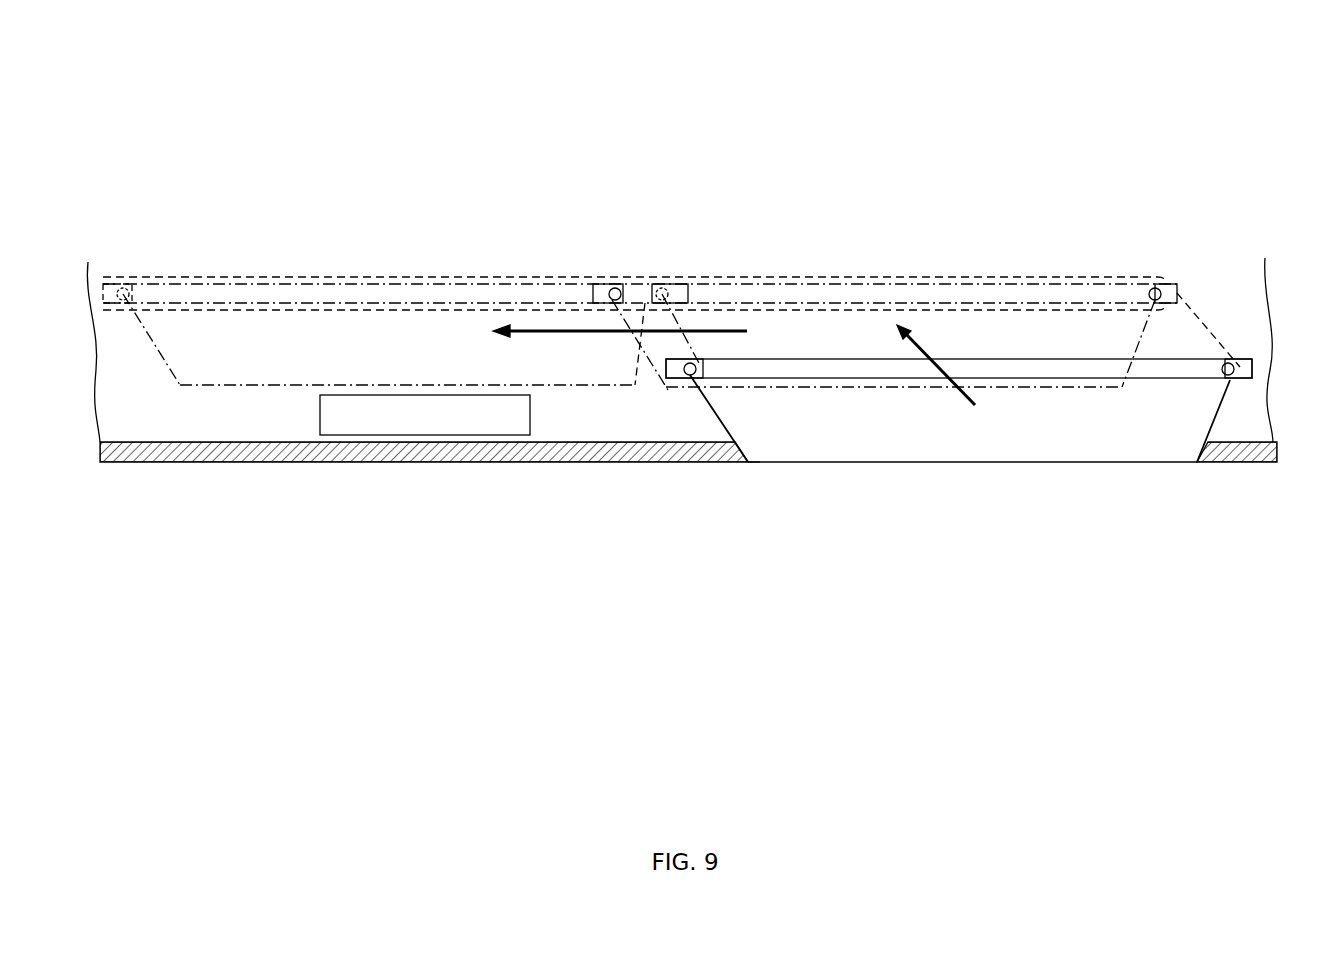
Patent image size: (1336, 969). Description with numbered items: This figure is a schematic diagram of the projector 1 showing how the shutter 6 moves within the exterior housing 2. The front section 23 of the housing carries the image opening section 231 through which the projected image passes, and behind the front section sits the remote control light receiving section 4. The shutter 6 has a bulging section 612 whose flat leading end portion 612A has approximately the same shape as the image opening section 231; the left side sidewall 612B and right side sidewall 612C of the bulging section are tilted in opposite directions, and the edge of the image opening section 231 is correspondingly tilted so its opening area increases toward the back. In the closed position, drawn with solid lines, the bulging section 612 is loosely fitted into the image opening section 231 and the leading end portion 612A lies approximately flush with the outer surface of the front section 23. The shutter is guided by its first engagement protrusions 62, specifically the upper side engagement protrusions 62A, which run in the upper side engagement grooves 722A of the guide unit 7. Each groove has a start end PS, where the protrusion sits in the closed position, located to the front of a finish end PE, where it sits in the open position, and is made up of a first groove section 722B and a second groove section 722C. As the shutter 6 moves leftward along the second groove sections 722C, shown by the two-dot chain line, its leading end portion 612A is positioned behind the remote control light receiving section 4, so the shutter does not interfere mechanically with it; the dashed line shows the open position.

The printer 1 is at (225, 140).
The exterior housing 2 is at (688, 486).
The front section 23 is at (202, 462).
The image opening section 231 is at (747, 465).
The remote control light receiving section 4 is at (428, 423).
The shutter 6 is at (293, 330).
The first engagement protrusion 62 is at (681, 333).
The upper side engagement protrusion 62A is at (133, 290).
The bulging section 612 is at (1013, 462).
The leading end portion 612A is at (292, 385).
The left side sidewall 612B is at (704, 412).
The right side sidewall 612C is at (1217, 410).
The guide unit 7 is at (662, 226).
The upper side engagement groove 722A is at (662, 226).
The first groove section 722B is at (513, 188).
The second groove section 722C is at (533, 278).
The finish end PE is at (122, 288).
The start end PS is at (668, 390).